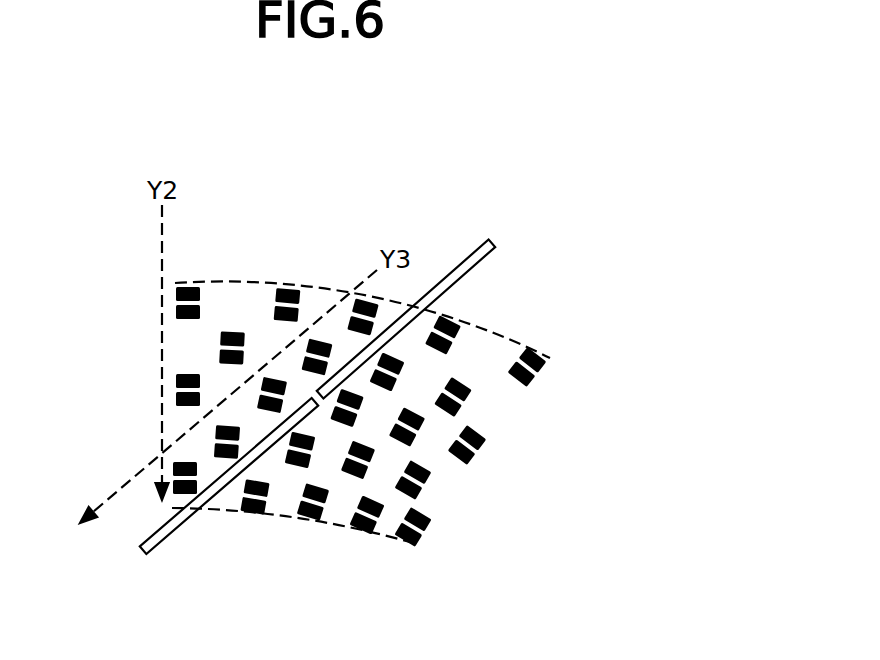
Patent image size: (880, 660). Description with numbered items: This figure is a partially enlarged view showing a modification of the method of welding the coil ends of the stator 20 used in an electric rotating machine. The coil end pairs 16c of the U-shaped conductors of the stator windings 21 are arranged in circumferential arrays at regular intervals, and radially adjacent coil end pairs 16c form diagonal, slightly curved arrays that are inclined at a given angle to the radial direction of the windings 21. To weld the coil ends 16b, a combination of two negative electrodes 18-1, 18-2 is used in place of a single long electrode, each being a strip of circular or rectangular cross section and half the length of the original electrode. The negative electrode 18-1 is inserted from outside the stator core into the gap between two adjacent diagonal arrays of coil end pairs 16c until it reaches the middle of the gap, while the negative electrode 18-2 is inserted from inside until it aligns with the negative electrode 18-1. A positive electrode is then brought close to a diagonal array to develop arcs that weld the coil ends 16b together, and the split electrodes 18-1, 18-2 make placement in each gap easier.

The stator 20 is at (457, 167).
The stator windings 21 is at (502, 333).
The negative electrode 18-1 is at (492, 242).
The negative electrode 18-2 is at (138, 555).
The coil end pairs 16c is at (285, 287).
The coil ends 16b is at (472, 462).